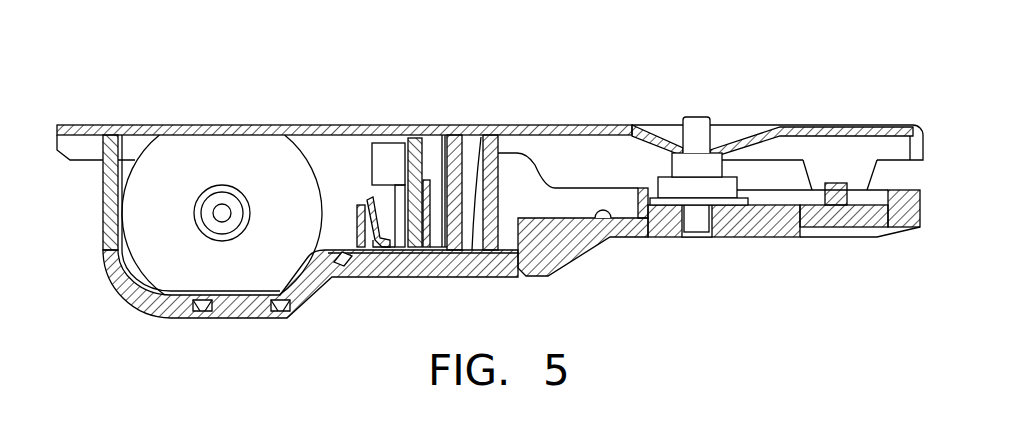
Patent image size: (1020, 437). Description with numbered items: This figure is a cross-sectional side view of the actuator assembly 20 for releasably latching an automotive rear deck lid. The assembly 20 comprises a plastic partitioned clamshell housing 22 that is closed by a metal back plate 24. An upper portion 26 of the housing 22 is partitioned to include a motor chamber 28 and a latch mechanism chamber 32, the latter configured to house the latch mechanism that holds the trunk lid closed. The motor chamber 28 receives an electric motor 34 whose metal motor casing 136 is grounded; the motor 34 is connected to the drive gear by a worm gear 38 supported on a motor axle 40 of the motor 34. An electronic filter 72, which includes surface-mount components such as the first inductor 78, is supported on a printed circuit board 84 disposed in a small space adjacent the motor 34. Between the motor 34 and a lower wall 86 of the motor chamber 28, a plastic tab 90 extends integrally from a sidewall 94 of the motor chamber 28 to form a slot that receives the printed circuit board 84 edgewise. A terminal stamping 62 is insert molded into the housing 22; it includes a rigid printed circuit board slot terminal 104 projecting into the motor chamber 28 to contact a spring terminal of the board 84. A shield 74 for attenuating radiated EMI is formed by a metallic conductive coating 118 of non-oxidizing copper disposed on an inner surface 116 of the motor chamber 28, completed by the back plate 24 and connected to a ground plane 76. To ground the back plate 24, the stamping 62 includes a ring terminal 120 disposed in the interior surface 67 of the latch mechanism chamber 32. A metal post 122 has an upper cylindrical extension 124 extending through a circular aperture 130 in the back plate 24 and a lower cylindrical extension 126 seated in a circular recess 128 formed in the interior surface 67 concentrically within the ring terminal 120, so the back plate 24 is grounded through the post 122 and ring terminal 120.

The actuator assembly 20 is at (815, 93).
The clamshell housing 22 is at (289, 223).
The back plate 24 is at (490, 110).
The upper portion 26 is at (308, 292).
The motor chamber 28 is at (166, 159).
The inner surface 116 is at (133, 160).
The metallic conductive coating 118 is at (124, 95).
The ground plane 76 is at (124, 95).
The shield 74 is at (116, 148).
The electric motor 34 is at (188, 177).
The metal motor casing 136 is at (258, 162).
The worm gear 38 is at (202, 218).
The motor axle 40 is at (218, 217).
The electronic filter 72 is at (390, 182).
The plastic tab 90 is at (407, 247).
The sidewall 94 is at (350, 190).
The first inductor 78 is at (398, 165).
The printed circuit board 84 is at (428, 192).
The second printed circuit board slot terminal 104 is at (437, 237).
The lower wall 86 is at (463, 245).
The terminal stamping 62 is at (573, 199).
The interior surface 67 is at (610, 228).
The latch mechanism chamber 32 is at (790, 198).
The ring terminal 120 is at (701, 181).
The metal post 122 is at (705, 133).
The upper cylindrical extension 124 is at (688, 125).
The lower cylindrical extension 126 is at (690, 218).
The circular recess 128 is at (677, 238).
The circular aperture 130 is at (712, 150).